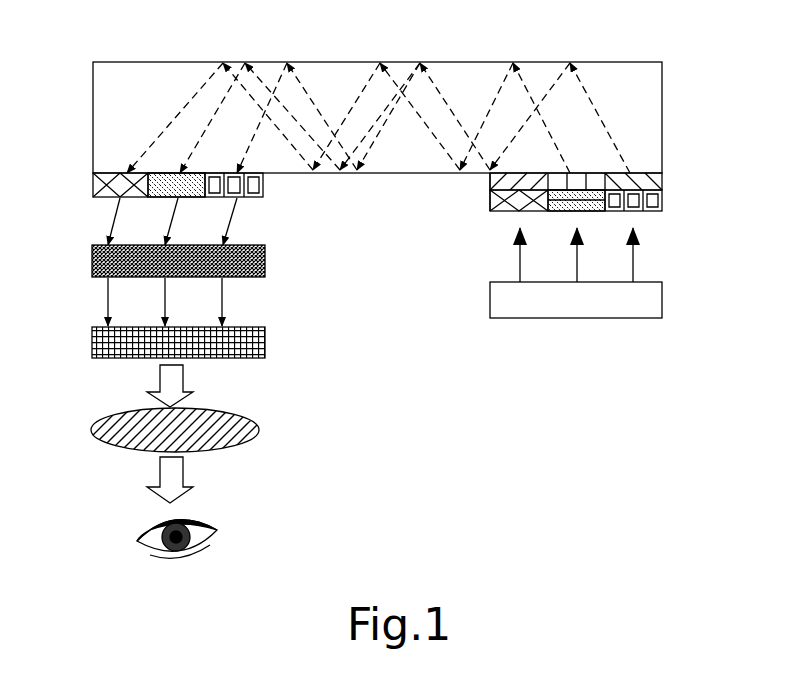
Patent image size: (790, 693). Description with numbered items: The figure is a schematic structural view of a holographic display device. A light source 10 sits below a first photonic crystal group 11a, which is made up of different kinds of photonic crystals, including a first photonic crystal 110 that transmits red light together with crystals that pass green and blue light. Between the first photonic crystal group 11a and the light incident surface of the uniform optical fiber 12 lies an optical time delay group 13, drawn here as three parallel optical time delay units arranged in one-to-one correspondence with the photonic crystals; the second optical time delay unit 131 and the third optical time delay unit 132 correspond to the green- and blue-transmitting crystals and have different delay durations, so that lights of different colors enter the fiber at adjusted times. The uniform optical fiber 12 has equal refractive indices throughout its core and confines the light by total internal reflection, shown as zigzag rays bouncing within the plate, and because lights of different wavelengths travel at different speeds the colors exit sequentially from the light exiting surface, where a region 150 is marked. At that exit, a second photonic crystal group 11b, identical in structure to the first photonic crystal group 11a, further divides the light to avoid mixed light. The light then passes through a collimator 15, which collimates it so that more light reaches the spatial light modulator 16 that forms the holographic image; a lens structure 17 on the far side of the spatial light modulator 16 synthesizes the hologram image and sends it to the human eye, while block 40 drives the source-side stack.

The light source 10 is at (576, 209).
The first photonic crystal group 11a is at (611, 220).
The second photonic crystal group 11b is at (168, 204).
The uniform optical fiber 12 is at (665, 112).
The optical time delay group 13 is at (665, 180).
The collimator 15 is at (268, 257).
The spatial light modulator 16 is at (268, 340).
The lens structure 17 is at (258, 428).
The light source 40 is at (667, 300).
The first photonic crystal 110 is at (101, 198).
The second optical time delay unit 131 is at (551, 212).
The third optical time delay unit 132 is at (610, 212).
The light incident surface 150 is at (490, 185).